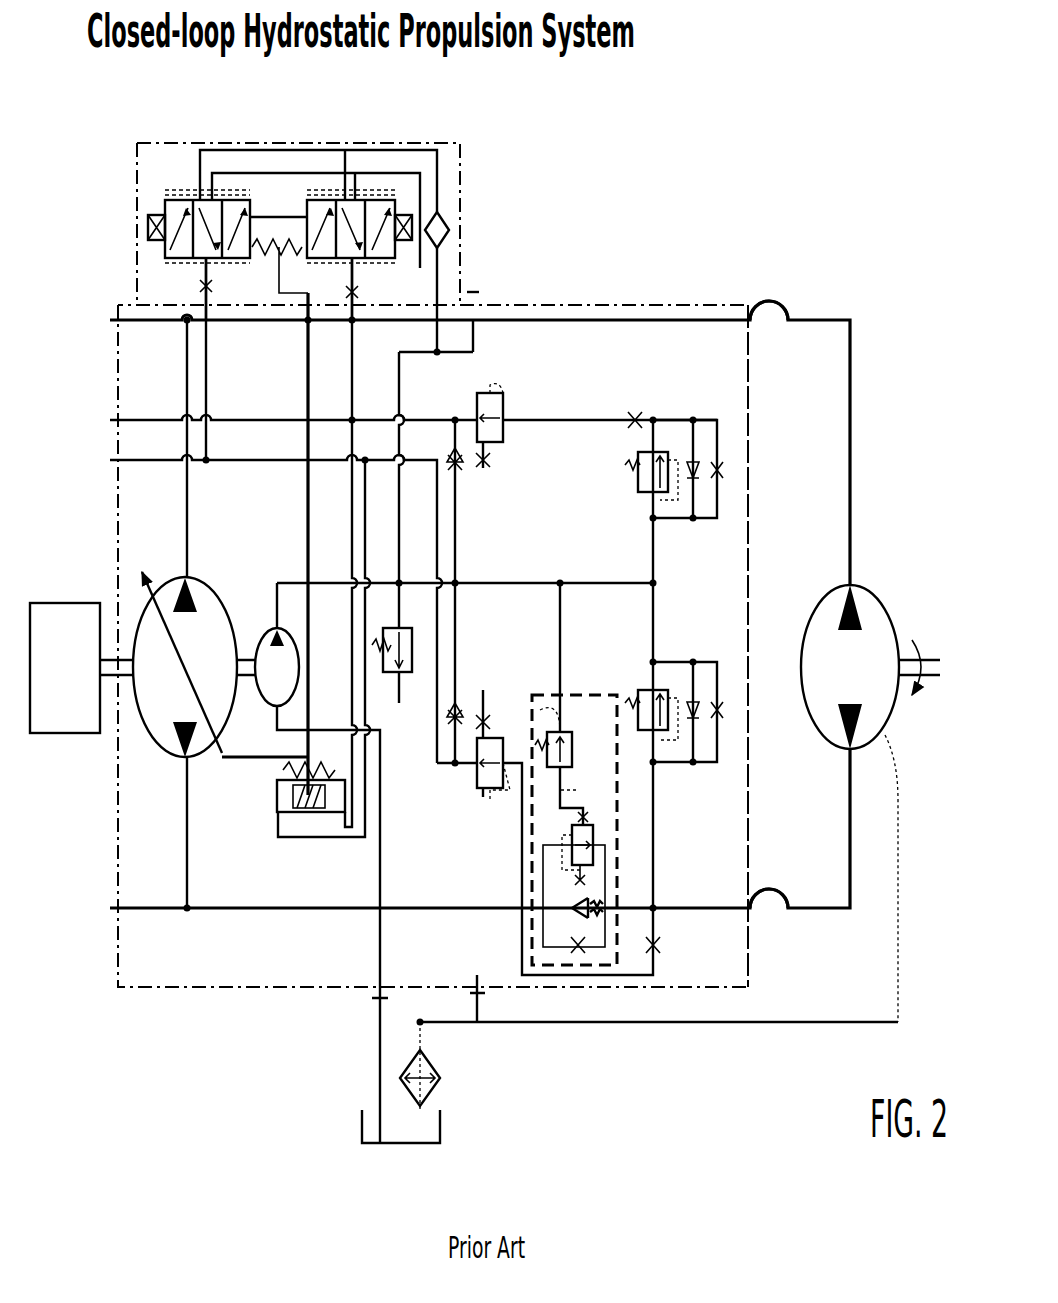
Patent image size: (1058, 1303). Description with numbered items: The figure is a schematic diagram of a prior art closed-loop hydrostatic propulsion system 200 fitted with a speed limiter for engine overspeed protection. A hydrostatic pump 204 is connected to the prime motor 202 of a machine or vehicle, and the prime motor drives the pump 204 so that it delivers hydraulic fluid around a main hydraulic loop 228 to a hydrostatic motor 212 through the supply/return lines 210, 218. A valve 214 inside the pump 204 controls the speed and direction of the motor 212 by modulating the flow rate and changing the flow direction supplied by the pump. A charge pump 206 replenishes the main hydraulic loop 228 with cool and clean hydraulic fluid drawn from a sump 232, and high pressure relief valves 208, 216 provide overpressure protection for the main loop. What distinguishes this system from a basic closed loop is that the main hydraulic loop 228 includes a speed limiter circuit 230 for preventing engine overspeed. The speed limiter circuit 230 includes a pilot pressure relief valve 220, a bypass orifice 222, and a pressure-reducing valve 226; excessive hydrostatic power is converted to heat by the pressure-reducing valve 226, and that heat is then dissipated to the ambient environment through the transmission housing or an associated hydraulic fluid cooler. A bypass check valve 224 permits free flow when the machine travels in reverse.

The closed-loop hydrostatic propulsion system 200 is at (664, 49).
The prime motor 202 is at (64, 742).
The hydrostatic pump 204 is at (168, 762).
The charge pump 206 is at (265, 712).
The high pressure relief valve 208 is at (676, 754).
The supply/return line 210 is at (776, 907).
The hydrostatic motor 212 is at (866, 768).
The valve 214 is at (462, 222).
The high pressure relief valve 216 is at (660, 440).
The supply/return line 218 is at (764, 298).
The pilot pressure relief valve 220 is at (549, 777).
The bypass orifice 222 is at (578, 960).
The bypass check valve 224 is at (591, 931).
The pressure-reducing valve 226 is at (597, 870).
The main hydraulic loop 228 is at (752, 468).
The speed limiter circuit 230 is at (580, 690).
The sump 232 is at (446, 1122).